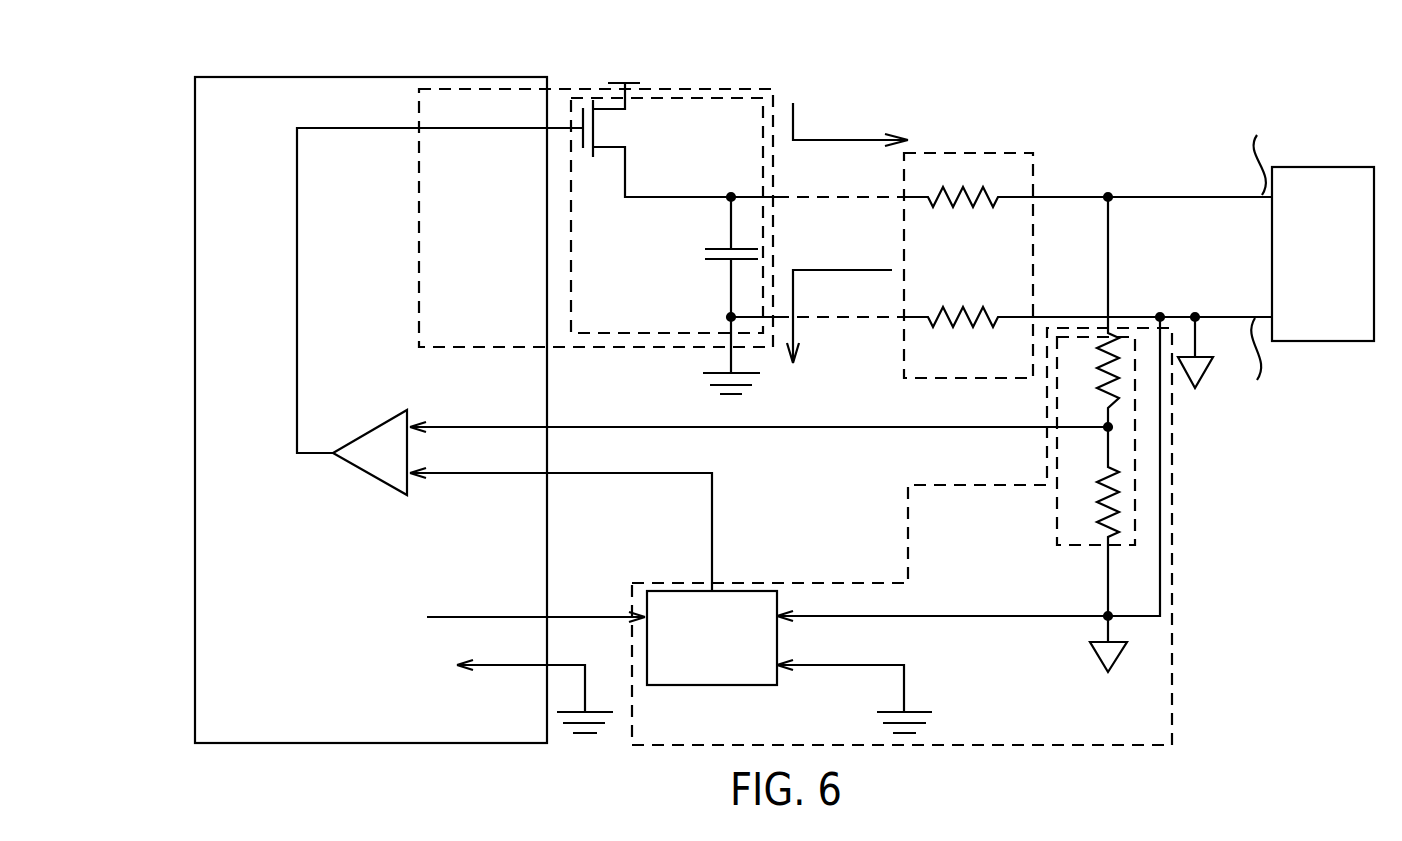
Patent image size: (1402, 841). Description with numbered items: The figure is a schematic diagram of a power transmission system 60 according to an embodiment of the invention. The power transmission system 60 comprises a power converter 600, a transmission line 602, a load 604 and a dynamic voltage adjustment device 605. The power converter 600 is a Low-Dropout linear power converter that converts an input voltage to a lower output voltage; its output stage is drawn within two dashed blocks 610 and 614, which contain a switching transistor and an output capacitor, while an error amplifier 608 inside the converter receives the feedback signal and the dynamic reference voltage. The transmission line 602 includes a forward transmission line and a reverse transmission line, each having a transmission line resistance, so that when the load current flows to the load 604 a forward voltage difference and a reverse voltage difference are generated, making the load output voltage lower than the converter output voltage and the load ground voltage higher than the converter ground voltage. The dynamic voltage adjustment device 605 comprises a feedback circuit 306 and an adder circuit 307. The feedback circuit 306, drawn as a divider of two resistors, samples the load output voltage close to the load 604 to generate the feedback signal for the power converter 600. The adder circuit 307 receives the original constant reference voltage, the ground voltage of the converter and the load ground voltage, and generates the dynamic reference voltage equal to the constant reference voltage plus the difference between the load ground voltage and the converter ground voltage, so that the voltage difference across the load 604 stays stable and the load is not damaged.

The power transmission system 60 is at (1173, 67).
The power converter 600 is at (272, 77).
The transmission line 602 is at (1025, 153).
The load 604 is at (1310, 167).
The dynamic voltage adjustment device 605 is at (1172, 555).
The error amplifier 608 is at (375, 425).
The output stage 610 is at (665, 89).
The switching unit 614 is at (730, 98).
The feedback circuit 306 is at (1065, 545).
The adder circuit 307 is at (770, 591).